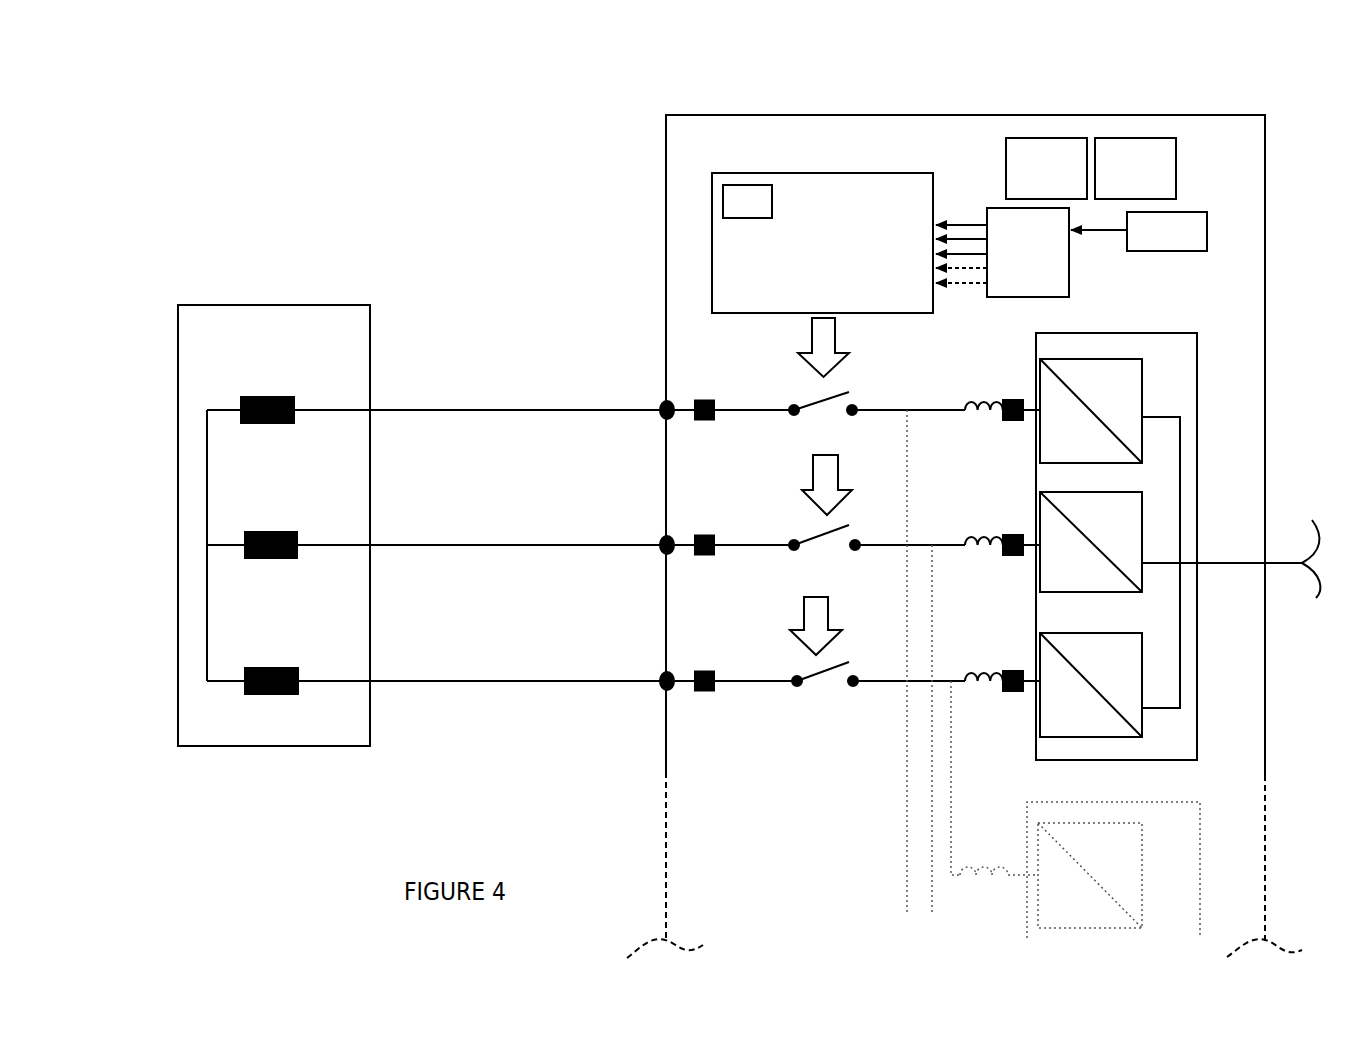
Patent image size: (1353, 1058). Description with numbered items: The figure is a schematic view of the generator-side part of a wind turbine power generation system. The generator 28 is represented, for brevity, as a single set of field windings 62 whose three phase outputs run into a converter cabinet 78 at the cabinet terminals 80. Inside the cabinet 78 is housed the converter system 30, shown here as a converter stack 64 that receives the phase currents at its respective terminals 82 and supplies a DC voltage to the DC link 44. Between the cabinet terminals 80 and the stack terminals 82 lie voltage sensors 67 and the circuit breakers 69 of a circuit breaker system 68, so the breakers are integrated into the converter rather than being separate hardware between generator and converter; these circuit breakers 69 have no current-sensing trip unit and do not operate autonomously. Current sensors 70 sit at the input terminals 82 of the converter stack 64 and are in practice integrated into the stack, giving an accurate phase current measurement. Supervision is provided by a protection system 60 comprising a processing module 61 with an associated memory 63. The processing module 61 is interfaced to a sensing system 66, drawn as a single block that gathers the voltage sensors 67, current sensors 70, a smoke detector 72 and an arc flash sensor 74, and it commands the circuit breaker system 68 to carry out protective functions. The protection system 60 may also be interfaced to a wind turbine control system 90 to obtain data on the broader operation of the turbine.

The generator 28 is at (217, 283).
The field windings 62 is at (205, 653).
The protection system 60 is at (685, 180).
The converter cabinet 78 is at (967, 115).
The processing module 61 is at (822, 414).
The memory 63 is at (747, 185).
The sensing system 66 is at (1002, 252).
The smoke detector 72 is at (1046, 168).
The arc flash sensor 74 is at (1135, 168).
The wind turbine control system 90 is at (1139, 231).
The cabinet terminals 80 is at (661, 405).
The voltage sensors 67 is at (705, 425).
The circuit breakers 69 is at (792, 430).
The circuit breaker system 68 is at (827, 730).
The current sensors 70 is at (1010, 396).
The converter stack terminals 82 is at (1030, 413).
The converter system 30 is at (1230, 318).
The converter stack 64 is at (1088, 358).
The DC link 44 is at (1277, 560).